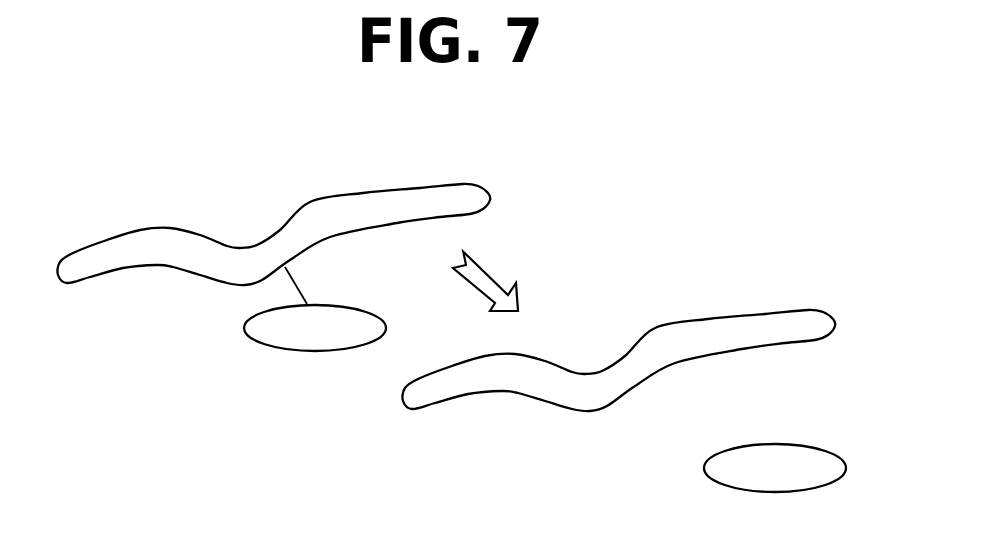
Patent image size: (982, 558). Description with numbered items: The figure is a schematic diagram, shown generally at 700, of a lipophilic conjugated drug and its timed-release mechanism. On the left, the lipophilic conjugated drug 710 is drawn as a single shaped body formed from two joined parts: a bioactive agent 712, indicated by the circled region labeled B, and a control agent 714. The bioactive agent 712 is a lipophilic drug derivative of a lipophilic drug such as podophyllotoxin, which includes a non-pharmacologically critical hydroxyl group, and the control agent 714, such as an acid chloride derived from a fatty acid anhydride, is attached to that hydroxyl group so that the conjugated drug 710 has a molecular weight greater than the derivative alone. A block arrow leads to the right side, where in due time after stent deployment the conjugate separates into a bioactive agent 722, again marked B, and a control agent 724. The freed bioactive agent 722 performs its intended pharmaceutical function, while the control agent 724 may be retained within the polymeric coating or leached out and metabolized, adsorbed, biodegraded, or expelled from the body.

The schematic diagram of lipophilic conjugated drug and timed-release mechanism 700 is at (173, 100).
The lipophilic conjugated drug 710 is at (135, 216).
The bioactive agent 712 is at (245, 327).
The control agent 714 is at (310, 202).
The bioactive agent 722 is at (705, 467).
The control agent 724 is at (653, 328).